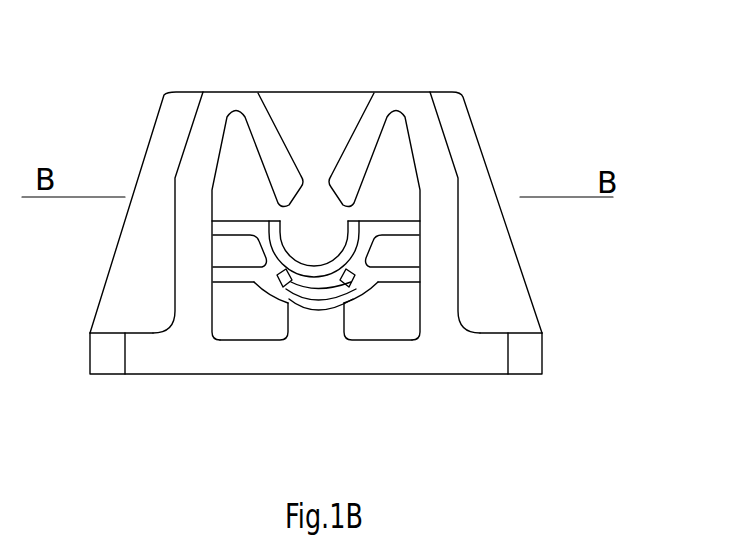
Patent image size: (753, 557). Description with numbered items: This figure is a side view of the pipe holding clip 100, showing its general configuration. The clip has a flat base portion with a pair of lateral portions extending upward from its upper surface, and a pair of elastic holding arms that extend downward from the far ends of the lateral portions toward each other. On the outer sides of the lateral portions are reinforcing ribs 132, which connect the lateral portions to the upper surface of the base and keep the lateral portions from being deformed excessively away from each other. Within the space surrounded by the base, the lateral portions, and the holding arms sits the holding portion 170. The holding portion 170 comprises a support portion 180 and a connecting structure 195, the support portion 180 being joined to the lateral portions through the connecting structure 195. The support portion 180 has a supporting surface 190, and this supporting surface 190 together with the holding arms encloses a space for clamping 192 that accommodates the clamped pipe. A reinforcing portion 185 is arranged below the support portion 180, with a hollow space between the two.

The pipe holding clip 100 is at (518, 130).
The reinforcing ribs 132 is at (134, 258).
The holding portion 170 is at (295, 235).
The support portion 180 is at (322, 268).
The reinforcing portion 185 is at (310, 299).
The supporting surface 190 is at (292, 277).
The space for clamping 192 is at (352, 310).
The connecting structure 195 is at (228, 280).